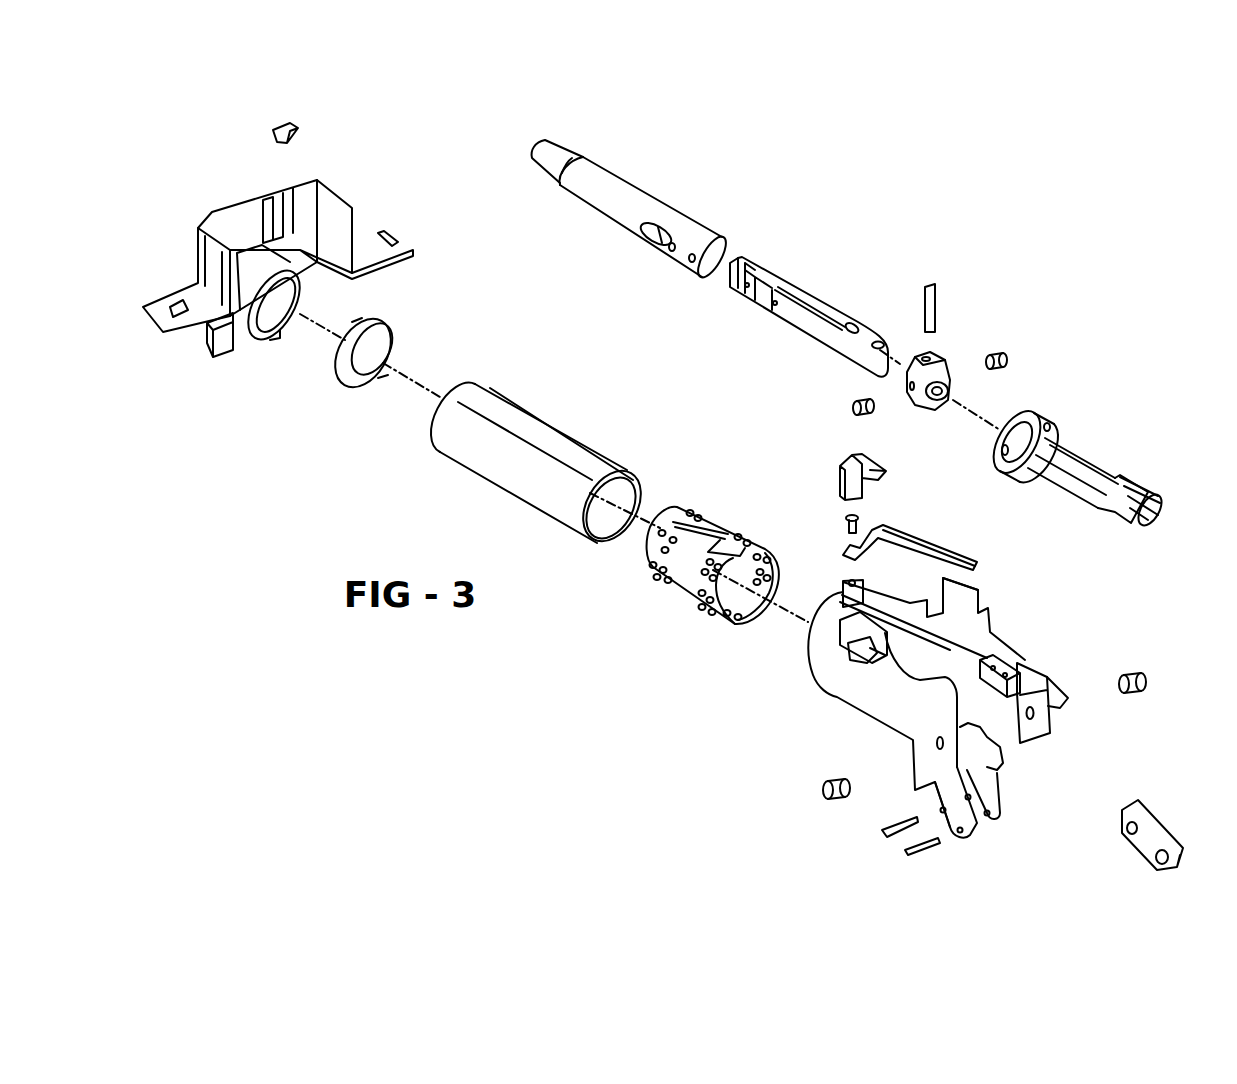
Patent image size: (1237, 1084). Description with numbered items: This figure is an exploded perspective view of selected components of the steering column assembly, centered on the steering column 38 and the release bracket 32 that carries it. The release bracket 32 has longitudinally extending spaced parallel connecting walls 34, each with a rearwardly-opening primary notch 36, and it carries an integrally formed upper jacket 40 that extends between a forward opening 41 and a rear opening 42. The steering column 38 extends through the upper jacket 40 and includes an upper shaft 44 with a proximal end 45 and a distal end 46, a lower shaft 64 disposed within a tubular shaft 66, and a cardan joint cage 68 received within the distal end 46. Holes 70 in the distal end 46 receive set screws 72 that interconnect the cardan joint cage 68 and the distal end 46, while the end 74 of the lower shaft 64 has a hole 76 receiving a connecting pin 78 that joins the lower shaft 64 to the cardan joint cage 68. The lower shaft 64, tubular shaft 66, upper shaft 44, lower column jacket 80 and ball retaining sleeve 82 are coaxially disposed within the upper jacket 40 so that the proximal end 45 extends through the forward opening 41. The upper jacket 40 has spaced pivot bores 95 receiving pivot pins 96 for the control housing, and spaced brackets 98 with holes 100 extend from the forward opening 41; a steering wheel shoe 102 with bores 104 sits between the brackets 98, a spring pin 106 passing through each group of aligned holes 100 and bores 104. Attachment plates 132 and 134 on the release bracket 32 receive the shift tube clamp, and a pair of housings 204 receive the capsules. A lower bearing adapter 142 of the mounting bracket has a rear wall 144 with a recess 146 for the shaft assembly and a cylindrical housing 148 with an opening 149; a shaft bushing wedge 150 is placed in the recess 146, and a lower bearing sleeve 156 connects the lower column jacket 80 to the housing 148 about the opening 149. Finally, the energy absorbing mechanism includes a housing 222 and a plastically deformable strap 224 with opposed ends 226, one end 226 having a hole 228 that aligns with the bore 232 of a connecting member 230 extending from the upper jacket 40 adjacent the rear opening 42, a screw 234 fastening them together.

The release bracket 32 is at (1006, 640).
The connecting walls 34 is at (837, 694).
The primary notch 36 is at (873, 655).
The steering column 38 is at (840, 294).
The upper jacket 40 is at (837, 703).
The forward opening 41 is at (993, 752).
The rear opening 42 is at (822, 610).
The upper shaft 44 is at (1093, 453).
The proximal end 45 is at (1160, 508).
The distal end 46 is at (1017, 412).
The lower shaft 64 is at (797, 290).
The tubular shaft 66 is at (660, 208).
The cardan joint cage 68 is at (947, 352).
The holes 70 is at (1050, 425).
The set screws 72 is at (1007, 355).
The end 74 is at (880, 367).
The hole 76 is at (882, 343).
The connecting pin 78 is at (935, 297).
The lower column jacket 80 is at (593, 460).
The ball retaining sleeve 82 is at (720, 527).
The pivot bores 95 is at (933, 755).
The pivot pins 96 is at (1142, 677).
The brackets 98 is at (990, 822).
The holes 100 is at (930, 798).
The steering wheel shoe 102 is at (1140, 807).
The bores 104 is at (1122, 823).
The spring pin 106 is at (897, 835).
The attachment plate 132 is at (1060, 688).
The attachment plate 134 is at (1024, 664).
The lower bearing adapter 142 is at (343, 197).
The rear wall 144 is at (218, 209).
The recess 146 is at (280, 217).
The cylindrical housing 148 is at (240, 320).
The opening 149 is at (270, 327).
The shaft bushing wedge 150 is at (293, 138).
The lower bearing sleeve 156 is at (393, 348).
The housings 204 is at (986, 588).
The housing 222 is at (873, 467).
The plastically deformable strap 224 is at (913, 533).
The ends 226 is at (973, 560).
The hole 228 is at (848, 560).
The connecting member 230 is at (866, 590).
The bore 232 is at (855, 582).
The screw 234 is at (847, 520).